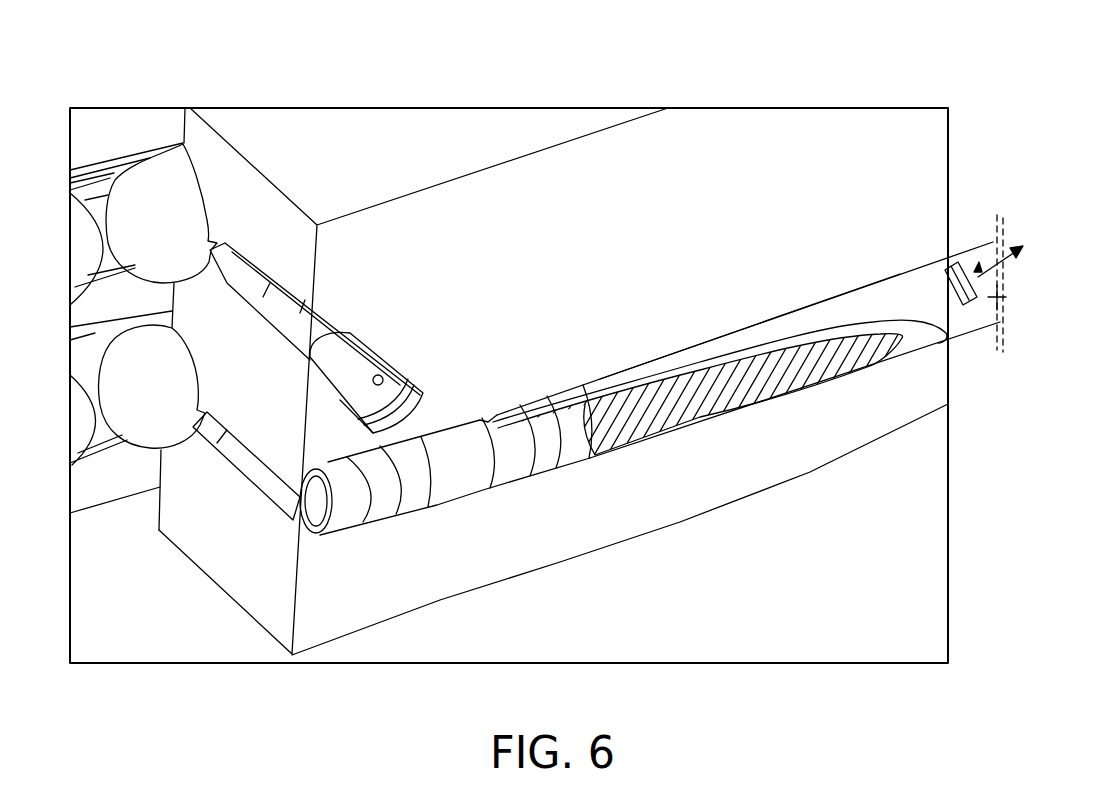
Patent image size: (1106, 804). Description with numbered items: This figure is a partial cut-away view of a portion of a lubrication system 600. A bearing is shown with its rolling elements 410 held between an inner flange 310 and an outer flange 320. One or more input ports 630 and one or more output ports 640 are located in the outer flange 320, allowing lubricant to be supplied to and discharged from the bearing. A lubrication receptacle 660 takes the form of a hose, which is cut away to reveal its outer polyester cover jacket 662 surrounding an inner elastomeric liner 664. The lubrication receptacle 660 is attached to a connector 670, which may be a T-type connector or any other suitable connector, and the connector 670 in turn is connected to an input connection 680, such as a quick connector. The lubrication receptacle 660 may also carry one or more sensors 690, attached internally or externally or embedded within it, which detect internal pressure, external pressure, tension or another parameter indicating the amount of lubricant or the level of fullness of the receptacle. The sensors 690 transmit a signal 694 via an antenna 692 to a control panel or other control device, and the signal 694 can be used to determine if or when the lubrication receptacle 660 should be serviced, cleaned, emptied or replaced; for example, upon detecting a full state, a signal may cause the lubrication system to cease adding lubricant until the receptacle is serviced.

The lubrication system 600 is at (298, 47).
The inner flange 310 is at (103, 133).
The outer flange 320 is at (601, 279).
The rolling elements 410 is at (192, 231).
The input port 630 is at (252, 283).
The input connection 680 is at (383, 347).
The output port 640 is at (275, 478).
The connector 670 is at (478, 482).
The lubrication receptacle 660 is at (935, 343).
The outer polyester cover jacket 662 is at (907, 293).
The inner elastomeric liner 664 is at (720, 398).
The sensor 690 is at (955, 255).
The antenna 692 is at (1005, 297).
The signal 694 is at (1022, 250).